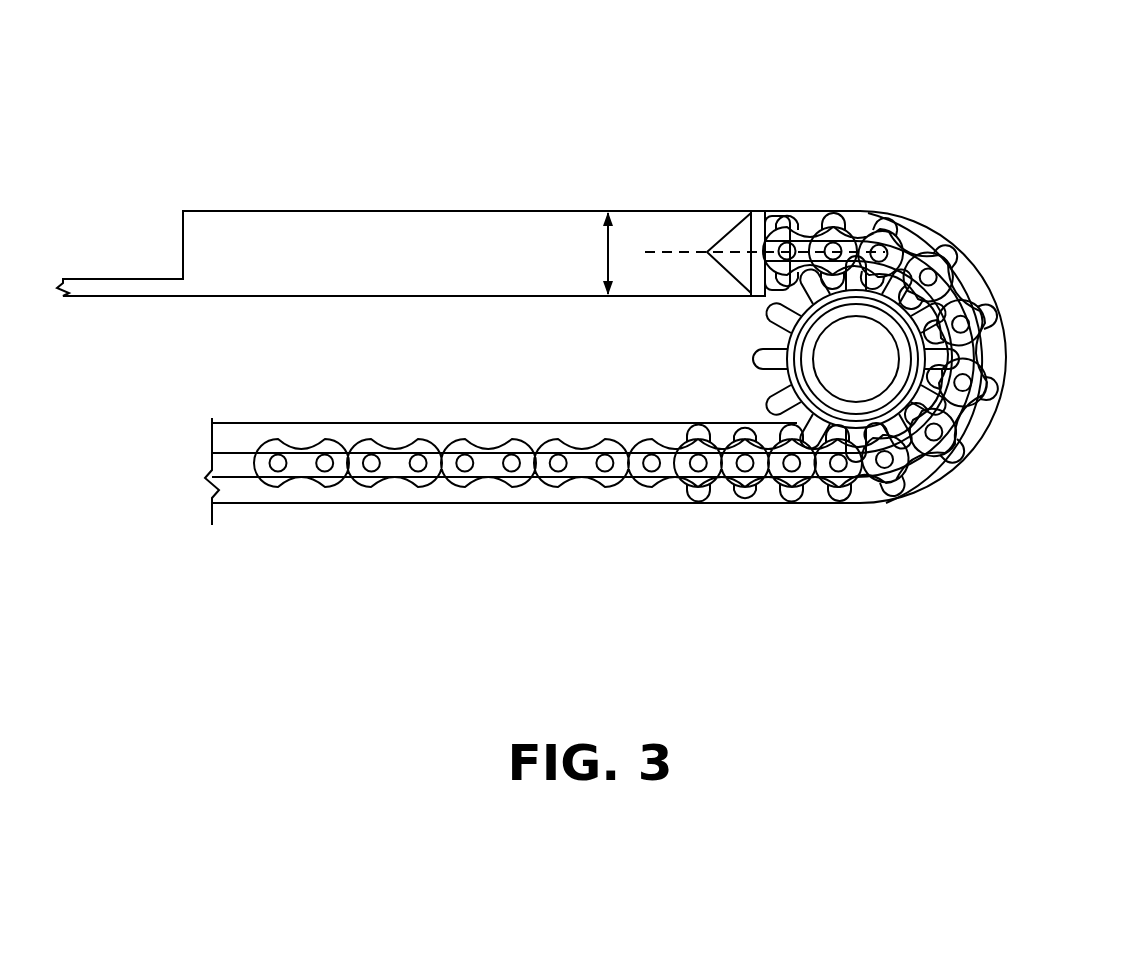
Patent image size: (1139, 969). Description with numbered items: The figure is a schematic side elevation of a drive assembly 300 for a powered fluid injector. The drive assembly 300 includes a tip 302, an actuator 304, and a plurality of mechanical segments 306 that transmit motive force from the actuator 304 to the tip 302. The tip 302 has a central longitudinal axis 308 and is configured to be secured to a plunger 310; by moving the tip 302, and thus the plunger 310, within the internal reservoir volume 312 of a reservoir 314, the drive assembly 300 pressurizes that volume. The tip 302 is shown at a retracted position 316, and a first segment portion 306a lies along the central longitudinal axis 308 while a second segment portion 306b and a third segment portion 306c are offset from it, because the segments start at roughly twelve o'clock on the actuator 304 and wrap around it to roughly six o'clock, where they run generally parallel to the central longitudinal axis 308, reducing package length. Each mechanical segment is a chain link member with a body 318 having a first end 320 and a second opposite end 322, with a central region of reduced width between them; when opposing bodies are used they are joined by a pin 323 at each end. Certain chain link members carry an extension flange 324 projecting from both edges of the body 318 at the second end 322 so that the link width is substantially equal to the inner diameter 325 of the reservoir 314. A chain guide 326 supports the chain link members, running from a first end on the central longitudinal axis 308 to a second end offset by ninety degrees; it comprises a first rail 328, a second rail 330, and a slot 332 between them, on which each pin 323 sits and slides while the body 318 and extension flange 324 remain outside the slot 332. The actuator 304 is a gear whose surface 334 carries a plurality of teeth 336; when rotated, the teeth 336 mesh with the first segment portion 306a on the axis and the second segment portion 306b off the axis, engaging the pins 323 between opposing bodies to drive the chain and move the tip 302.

The drive assembly 300 is at (905, 183).
The tip 302 is at (781, 222).
The actuator 304 is at (840, 382).
The plurality of mechanical segments 306 is at (963, 360).
The first segment portion 306a is at (808, 233).
The second segment portion 306b is at (977, 297).
The third segment portion 306c is at (865, 489).
The central longitudinal axis 308 is at (678, 252).
The plunger 310 is at (745, 228).
The internal reservoir volume 312 is at (458, 278).
The reservoir 314 is at (473, 208).
The retracted position 316 is at (707, 225).
The body 318 is at (917, 250).
The first end 320 is at (903, 217).
The second opposite end 322 is at (942, 262).
The pin 323 is at (930, 277).
The extension flange 324 is at (1002, 322).
The inner diameter 325 is at (603, 252).
The chain guide 326 is at (532, 474).
The first rail 328 is at (352, 499).
The second rail 330 is at (348, 432).
The slot 332 is at (395, 479).
The surface 334 is at (788, 337).
The plurality of teeth 336 is at (755, 363).